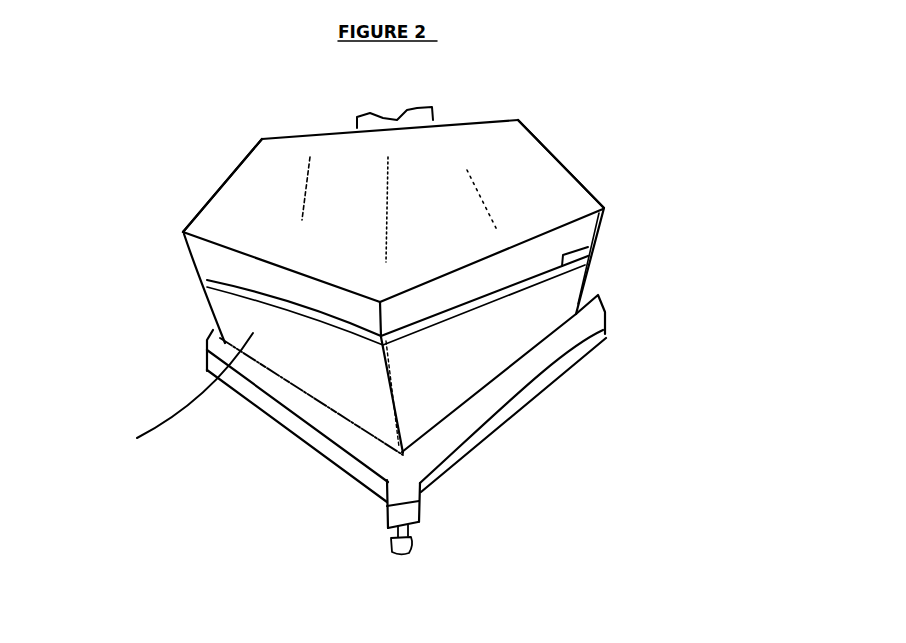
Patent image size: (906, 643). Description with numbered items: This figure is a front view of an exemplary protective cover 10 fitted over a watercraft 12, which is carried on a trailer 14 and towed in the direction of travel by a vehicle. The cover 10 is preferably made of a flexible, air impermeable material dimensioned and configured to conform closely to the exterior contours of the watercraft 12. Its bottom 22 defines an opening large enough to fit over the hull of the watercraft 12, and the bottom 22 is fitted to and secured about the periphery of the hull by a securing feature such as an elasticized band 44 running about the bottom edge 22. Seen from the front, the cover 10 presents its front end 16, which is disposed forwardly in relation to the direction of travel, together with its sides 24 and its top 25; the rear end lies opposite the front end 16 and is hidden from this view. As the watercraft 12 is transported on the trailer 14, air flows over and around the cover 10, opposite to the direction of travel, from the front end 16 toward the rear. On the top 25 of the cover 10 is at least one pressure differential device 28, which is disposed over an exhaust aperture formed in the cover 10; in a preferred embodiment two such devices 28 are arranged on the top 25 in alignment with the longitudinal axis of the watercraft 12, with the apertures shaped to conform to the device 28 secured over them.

The protective cover 10 is at (492, 138).
The watercraft 12 is at (502, 334).
The trailer 14 is at (452, 437).
The front end 16 is at (393, 285).
The bottom 22 is at (320, 320).
The sides 24 is at (189, 222).
The top 25 is at (462, 118).
The pressure differential device 28 is at (362, 118).
The elasticized band 44 is at (570, 257).